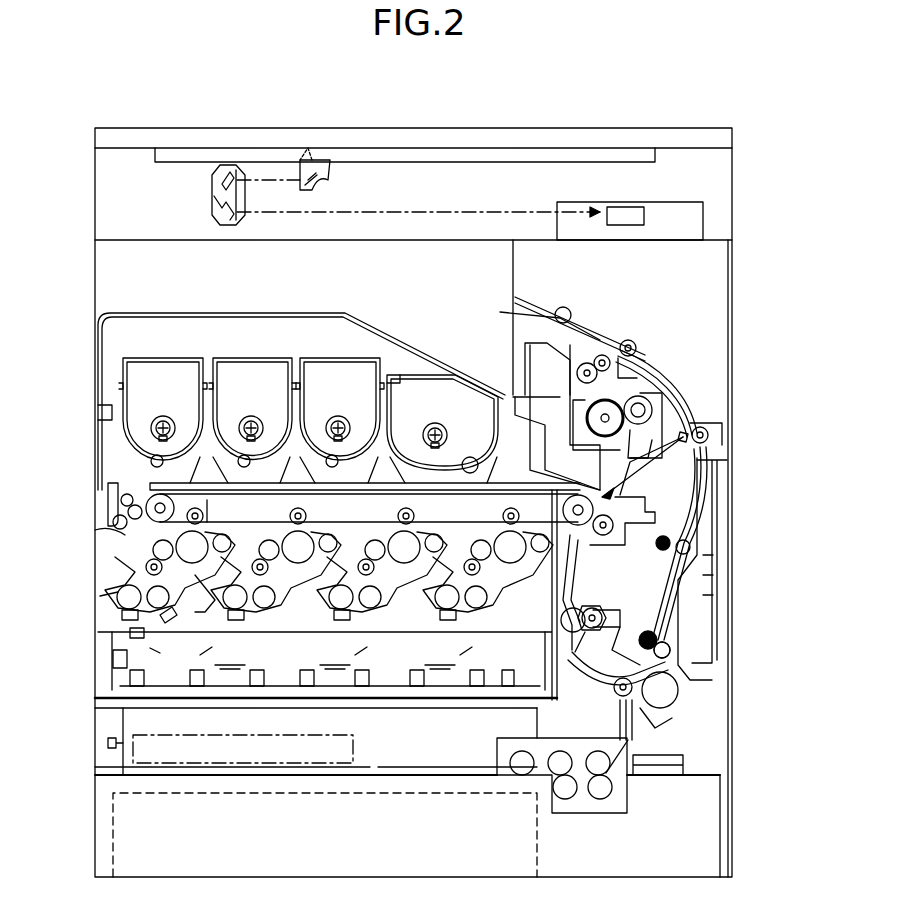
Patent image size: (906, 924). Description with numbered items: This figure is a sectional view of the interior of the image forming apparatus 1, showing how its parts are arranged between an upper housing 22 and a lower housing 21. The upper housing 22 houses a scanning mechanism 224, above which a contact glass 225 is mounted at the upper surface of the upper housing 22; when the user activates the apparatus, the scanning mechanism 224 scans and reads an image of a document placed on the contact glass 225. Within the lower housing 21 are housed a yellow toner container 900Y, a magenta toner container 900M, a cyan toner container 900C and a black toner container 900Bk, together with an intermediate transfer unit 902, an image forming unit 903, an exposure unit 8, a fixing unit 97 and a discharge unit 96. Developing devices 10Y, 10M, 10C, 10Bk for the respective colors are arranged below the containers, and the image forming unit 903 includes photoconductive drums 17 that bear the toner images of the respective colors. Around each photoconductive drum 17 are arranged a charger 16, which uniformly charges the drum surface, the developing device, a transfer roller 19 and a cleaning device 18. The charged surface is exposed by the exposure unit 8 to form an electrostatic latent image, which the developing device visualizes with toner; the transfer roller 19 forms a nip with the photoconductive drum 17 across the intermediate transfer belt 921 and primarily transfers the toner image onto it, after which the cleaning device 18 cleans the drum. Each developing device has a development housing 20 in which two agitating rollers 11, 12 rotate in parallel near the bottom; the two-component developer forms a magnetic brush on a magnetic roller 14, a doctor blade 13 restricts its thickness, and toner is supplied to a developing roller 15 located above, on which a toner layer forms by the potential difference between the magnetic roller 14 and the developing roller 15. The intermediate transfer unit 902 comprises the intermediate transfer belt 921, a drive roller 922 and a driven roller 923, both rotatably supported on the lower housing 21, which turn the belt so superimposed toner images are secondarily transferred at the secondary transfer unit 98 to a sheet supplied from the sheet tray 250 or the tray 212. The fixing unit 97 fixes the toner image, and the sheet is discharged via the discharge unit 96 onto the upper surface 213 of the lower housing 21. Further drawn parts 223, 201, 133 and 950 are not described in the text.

The image forming apparatus 1 is at (674, 117).
The upper housing 22 is at (722, 195).
The contact glass 225 is at (165, 150).
The mirror 223 is at (360, 136).
The scanning mechanism 224 is at (185, 190).
The upper surface 213 is at (100, 317).
The yellow toner container 900Y is at (165, 357).
The magenta toner container 900M is at (260, 357).
The cyan toner container 900C is at (340, 357).
The black toner container 900Bk is at (410, 375).
The intermediate transfer belt 921 is at (275, 498).
The transfer roller 19 is at (165, 500).
The photoconductive drum 17 is at (207, 500).
The cleaning device 18 is at (220, 536).
The drive roller 922 is at (600, 540).
The developing device 10Y is at (140, 599).
The developing device 10M is at (252, 535).
The developing device 10C is at (352, 535).
The developing device 10Bk is at (460, 535).
The magnetic roller 14 is at (192, 547).
The developing roller 15 is at (153, 548).
The development housing 20 is at (146, 568).
The agitating roller 12 is at (125, 608).
The doctor blade 13 is at (166, 597).
The charger 16 is at (205, 606).
The agitating roller 11 is at (170, 620).
The positioning member 201 is at (150, 638).
The intermediate transfer unit 902 is at (115, 503).
The driven roller 923 is at (130, 535).
The image forming unit 903 is at (84, 598).
The exposure unit 8 is at (118, 660).
The lower housing 21 is at (108, 742).
The sheet tray 250 is at (113, 848).
The sheet feed roller unit 133 is at (640, 742).
The registration roller 950 is at (678, 708).
The discharge unit 96 is at (597, 350).
The fixing unit 97 is at (645, 392).
The secondary transfer unit 98 is at (700, 457).
The tray 212 is at (723, 540).